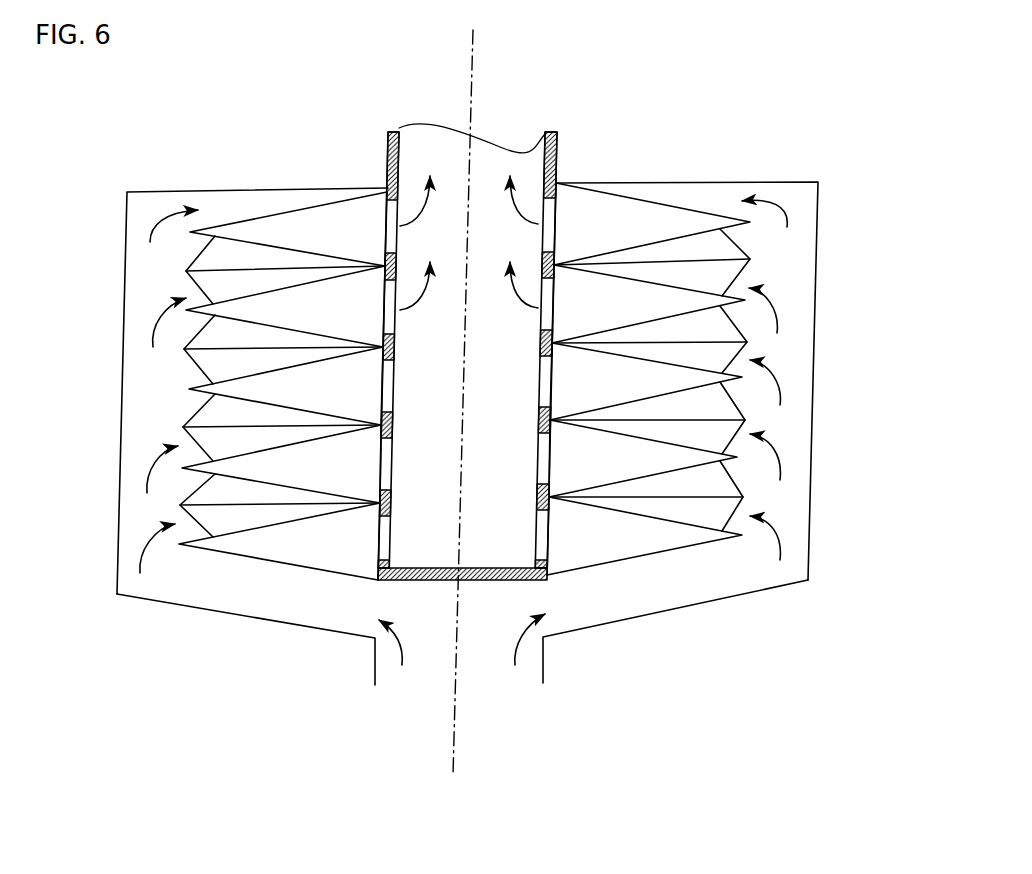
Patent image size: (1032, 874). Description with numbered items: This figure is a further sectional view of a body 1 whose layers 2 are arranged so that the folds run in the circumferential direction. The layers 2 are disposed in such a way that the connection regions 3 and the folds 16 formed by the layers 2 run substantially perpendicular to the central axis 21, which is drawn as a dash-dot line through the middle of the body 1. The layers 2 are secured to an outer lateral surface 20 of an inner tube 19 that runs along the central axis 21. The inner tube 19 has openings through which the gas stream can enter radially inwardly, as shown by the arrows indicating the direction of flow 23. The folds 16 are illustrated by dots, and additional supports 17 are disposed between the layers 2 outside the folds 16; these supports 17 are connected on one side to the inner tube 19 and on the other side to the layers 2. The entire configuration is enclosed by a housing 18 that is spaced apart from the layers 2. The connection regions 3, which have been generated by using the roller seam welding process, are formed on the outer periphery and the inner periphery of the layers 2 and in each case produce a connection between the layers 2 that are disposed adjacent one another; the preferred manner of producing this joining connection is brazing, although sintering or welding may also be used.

The body 1 is at (694, 660).
The layers 2 is at (266, 210).
The connection regions 3 is at (550, 355).
The folds 16 is at (663, 537).
The supports 17 is at (742, 344).
The housing 18 is at (818, 214).
The inner tube 19 is at (556, 157).
The outer lateral surface 20 is at (377, 510).
The central axis 21 is at (455, 737).
The direction of flow 23 is at (418, 216).